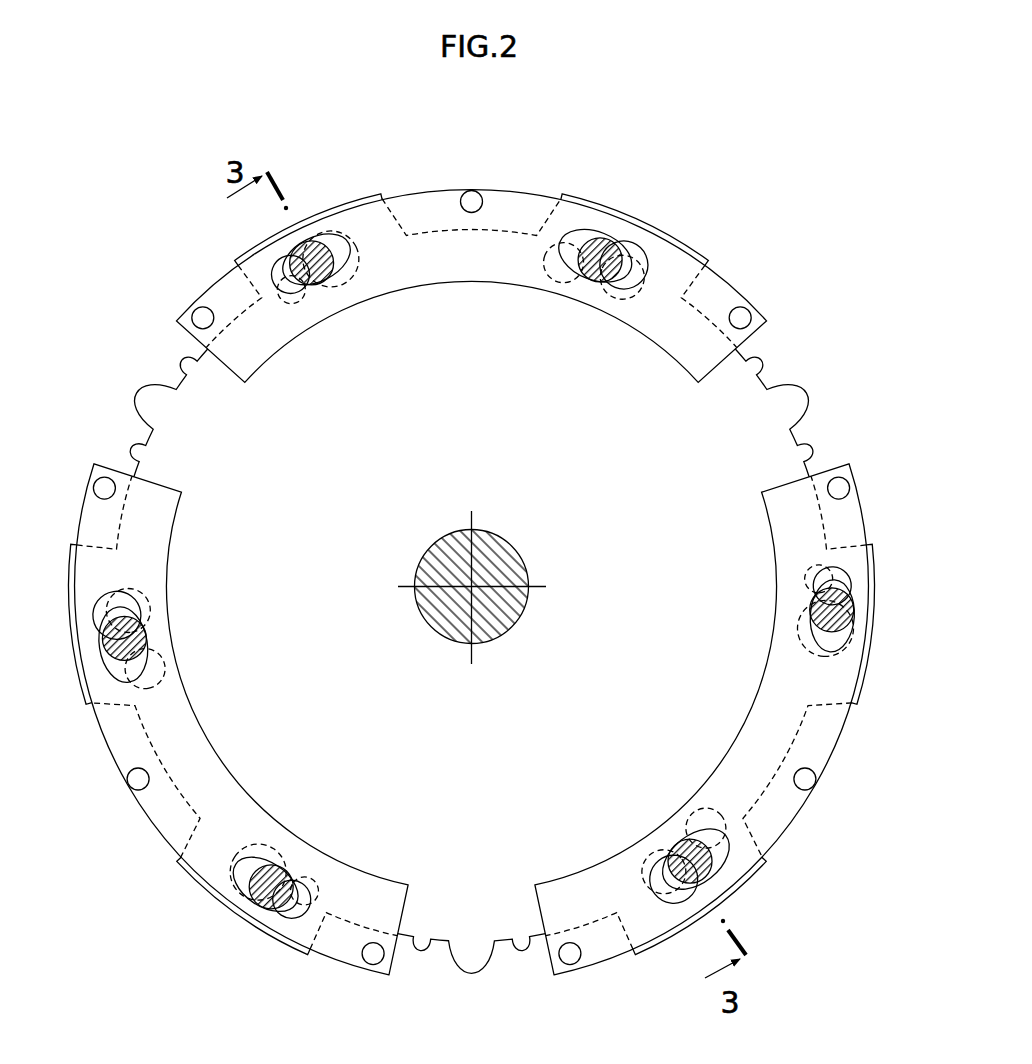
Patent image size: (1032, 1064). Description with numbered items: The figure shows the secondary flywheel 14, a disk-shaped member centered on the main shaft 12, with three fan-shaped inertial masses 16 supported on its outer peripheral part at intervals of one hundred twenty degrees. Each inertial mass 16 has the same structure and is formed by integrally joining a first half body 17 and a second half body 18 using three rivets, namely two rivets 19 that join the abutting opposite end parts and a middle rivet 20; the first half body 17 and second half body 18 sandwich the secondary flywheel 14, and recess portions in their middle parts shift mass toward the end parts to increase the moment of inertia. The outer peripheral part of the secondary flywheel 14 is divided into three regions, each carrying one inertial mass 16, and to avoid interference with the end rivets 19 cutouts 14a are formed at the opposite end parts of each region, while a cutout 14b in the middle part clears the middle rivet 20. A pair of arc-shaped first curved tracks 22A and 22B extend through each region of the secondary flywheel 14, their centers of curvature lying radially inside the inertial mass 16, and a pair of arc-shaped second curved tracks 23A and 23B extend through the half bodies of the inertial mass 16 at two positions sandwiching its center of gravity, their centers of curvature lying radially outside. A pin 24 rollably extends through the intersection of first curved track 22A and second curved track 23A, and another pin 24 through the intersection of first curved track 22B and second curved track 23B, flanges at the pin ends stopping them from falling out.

The main shaft 12 is at (511, 551).
The secondary flywheel 14 is at (796, 368).
The cutouts 14a is at (186, 370).
The cutout 14b is at (552, 192).
The inertial mass 16 is at (515, 288).
The first half body 17 is at (471, 591).
The second half body 18 is at (455, 268).
The rivets 19 is at (202, 316).
The middle rivet 20 is at (472, 200).
The first curved track 22A is at (303, 297).
The first curved track 22B is at (622, 297).
The second curved track 23A is at (331, 240).
The second curved track 23B is at (650, 258).
The pin 24 is at (599, 261).